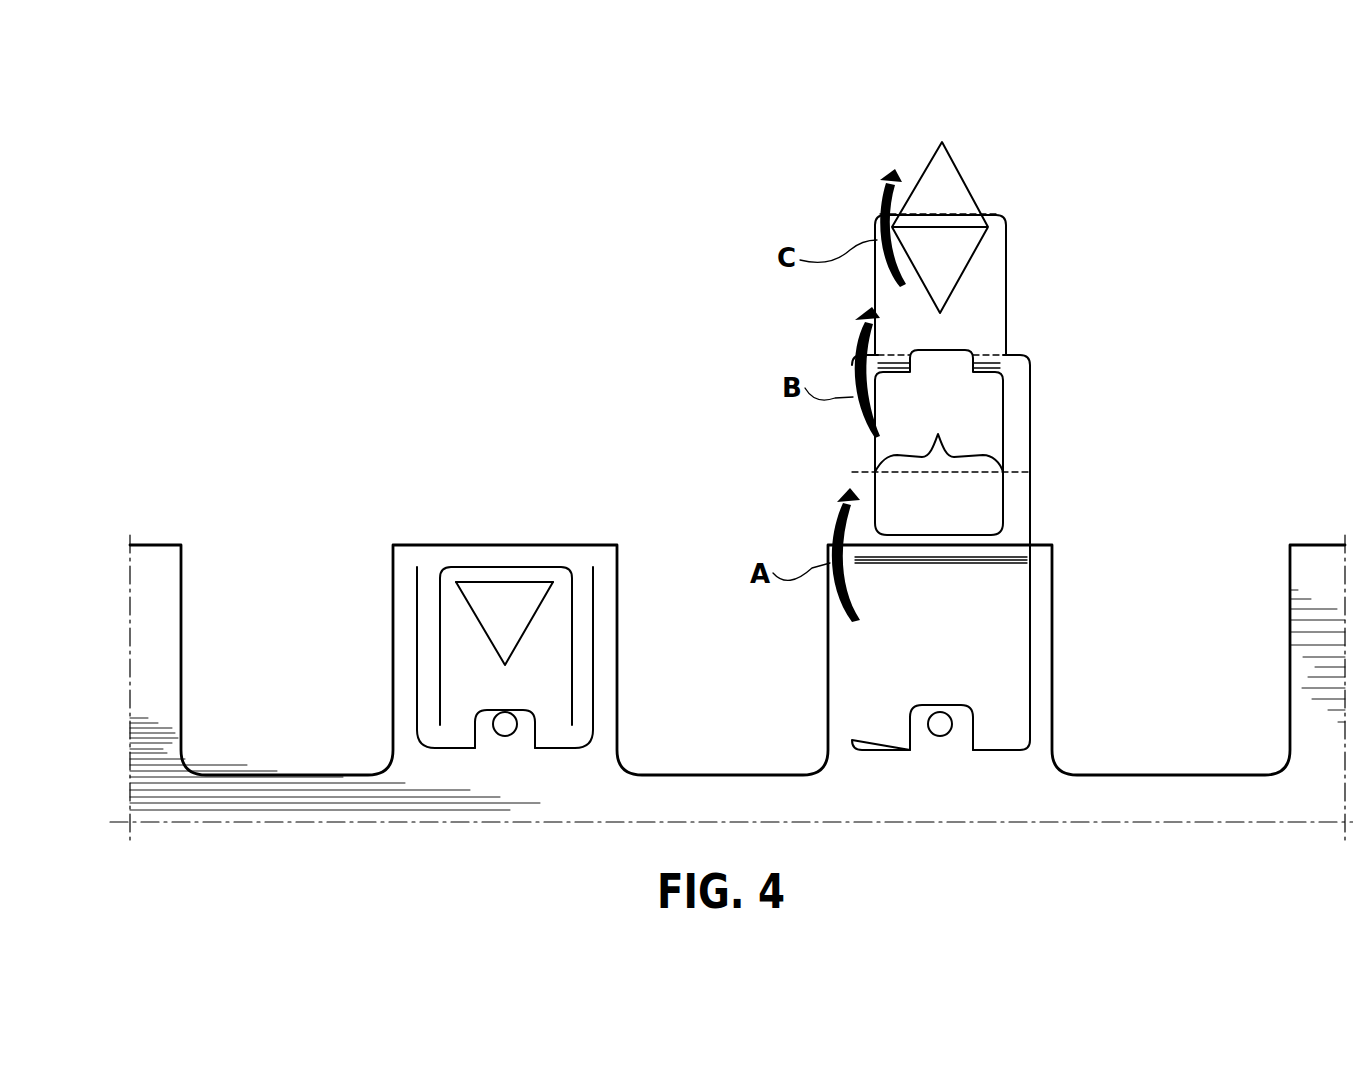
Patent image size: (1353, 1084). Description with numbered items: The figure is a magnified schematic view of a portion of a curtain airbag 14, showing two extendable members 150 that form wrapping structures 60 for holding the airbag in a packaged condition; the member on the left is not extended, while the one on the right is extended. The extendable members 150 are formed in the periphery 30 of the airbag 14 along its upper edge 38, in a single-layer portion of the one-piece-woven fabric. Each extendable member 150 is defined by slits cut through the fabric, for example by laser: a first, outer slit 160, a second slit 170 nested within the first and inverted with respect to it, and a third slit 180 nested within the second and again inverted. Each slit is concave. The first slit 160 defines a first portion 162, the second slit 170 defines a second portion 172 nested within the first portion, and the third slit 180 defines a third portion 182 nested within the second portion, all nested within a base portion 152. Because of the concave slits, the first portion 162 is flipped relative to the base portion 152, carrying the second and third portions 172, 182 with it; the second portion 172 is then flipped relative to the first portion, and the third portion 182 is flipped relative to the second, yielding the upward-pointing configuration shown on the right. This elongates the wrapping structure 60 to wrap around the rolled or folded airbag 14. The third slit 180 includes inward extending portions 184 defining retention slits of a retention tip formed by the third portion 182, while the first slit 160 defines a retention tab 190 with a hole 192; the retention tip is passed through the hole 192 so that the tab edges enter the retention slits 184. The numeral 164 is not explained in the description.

The airbag 14 is at (428, 378).
The periphery 30 is at (158, 805).
The upper edge 38 is at (157, 763).
The wrapping structure 60 is at (480, 432).
The extendable member 150 is at (388, 498).
The base portion 152 is at (605, 723).
The first slit 160 is at (415, 687).
The first portion 162 is at (428, 635).
The cutout 164 is at (938, 434).
The second slit 170 is at (572, 682).
The second portion 172 is at (540, 637).
The third slit 180 is at (503, 590).
The third portion 182 is at (522, 610).
The inward extending portions 184 is at (472, 577).
The retention tab 190 is at (527, 732).
The hole 192 is at (505, 724).